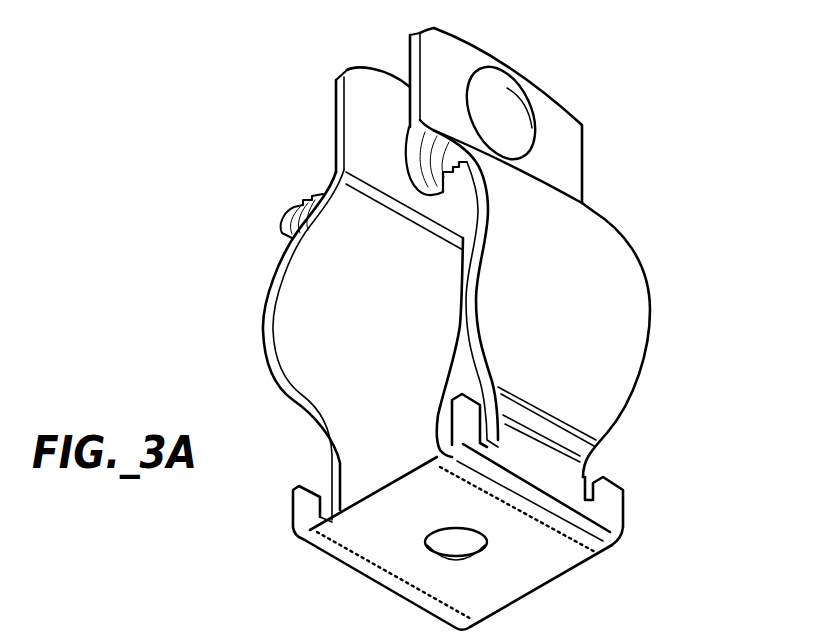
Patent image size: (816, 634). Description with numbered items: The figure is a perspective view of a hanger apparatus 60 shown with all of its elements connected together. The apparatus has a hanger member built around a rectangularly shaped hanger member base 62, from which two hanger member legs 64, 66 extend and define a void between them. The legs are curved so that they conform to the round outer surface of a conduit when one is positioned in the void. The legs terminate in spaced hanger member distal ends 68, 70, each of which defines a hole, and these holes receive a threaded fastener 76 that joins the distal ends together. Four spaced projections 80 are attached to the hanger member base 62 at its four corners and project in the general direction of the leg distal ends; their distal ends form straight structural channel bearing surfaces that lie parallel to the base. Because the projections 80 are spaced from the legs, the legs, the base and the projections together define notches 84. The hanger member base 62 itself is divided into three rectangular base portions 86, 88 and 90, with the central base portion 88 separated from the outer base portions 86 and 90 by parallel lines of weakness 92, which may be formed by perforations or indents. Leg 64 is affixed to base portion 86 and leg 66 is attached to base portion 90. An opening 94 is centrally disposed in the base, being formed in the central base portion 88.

The hanger apparatus 60 is at (585, 188).
The hanger member base 62 is at (560, 553).
The hanger member leg 64 is at (298, 290).
The hanger member leg 66 is at (635, 315).
The hanger member distal end 68 is at (355, 107).
The hanger member distal end 70 is at (461, 38).
The threaded fastener 76 is at (302, 190).
The projections 80 is at (308, 508).
The notches 84 is at (327, 507).
The base portion 86 is at (337, 550).
The central base portion 88 is at (538, 577).
The base portion 90 is at (600, 557).
The lines of weakness 92 is at (457, 478).
The opening 94 is at (443, 546).